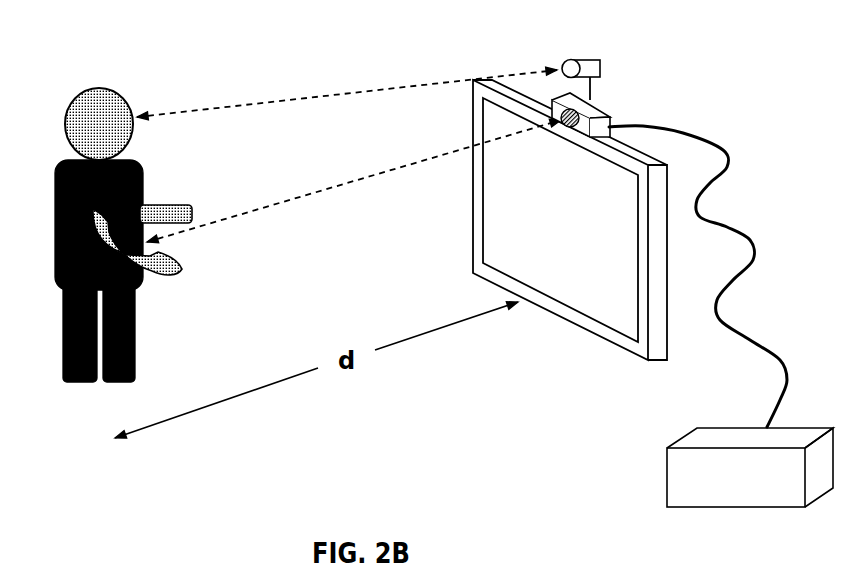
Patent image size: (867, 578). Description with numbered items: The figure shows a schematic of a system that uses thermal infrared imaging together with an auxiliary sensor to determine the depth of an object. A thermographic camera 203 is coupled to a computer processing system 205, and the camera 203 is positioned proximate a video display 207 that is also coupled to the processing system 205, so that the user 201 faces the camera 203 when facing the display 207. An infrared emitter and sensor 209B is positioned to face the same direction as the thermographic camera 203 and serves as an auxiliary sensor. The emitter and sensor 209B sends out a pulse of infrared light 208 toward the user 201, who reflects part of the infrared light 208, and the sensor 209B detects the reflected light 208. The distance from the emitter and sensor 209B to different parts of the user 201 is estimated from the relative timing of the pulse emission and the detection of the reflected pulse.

The user 201 is at (53, 185).
The thermographic camera 203 is at (608, 119).
The computer processing system 205 is at (722, 426).
The video display 207 is at (473, 205).
The infrared light 208 is at (285, 98).
The infrared emitter and sensor 209B is at (584, 55).